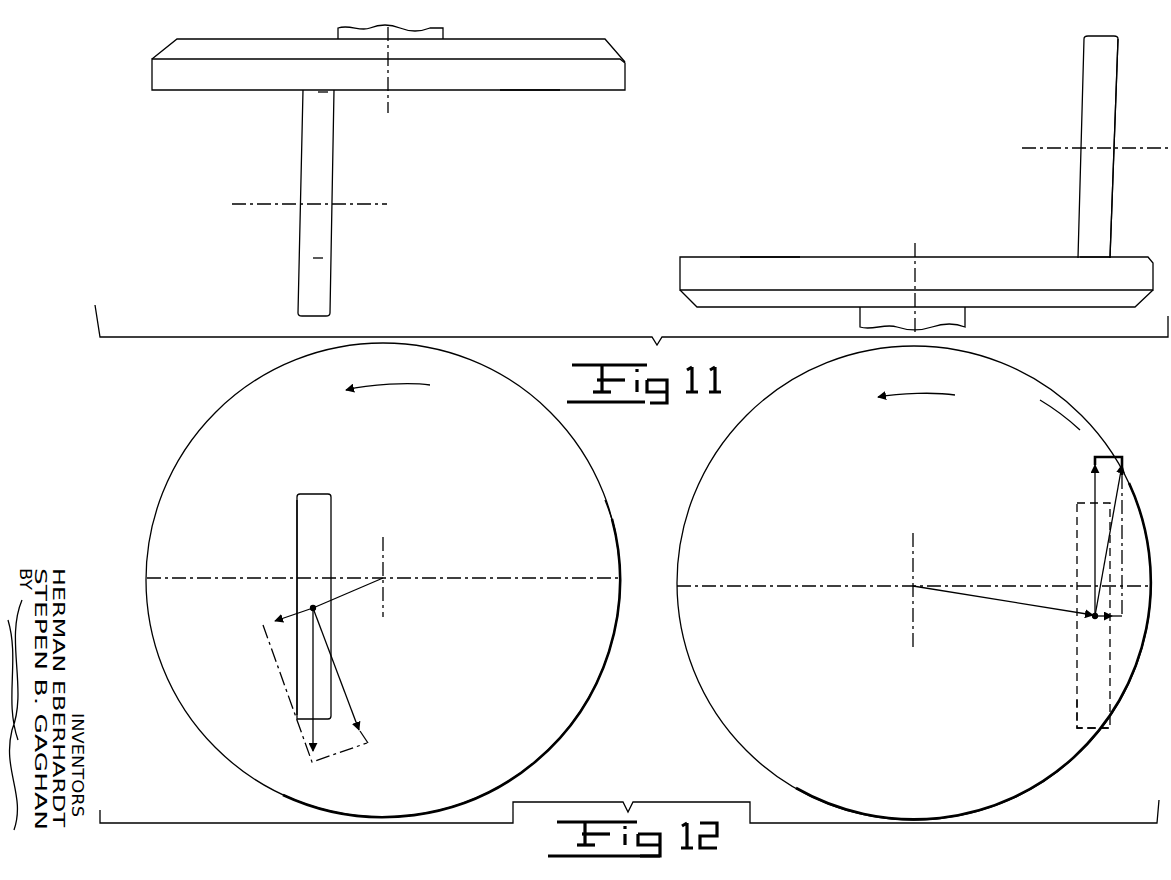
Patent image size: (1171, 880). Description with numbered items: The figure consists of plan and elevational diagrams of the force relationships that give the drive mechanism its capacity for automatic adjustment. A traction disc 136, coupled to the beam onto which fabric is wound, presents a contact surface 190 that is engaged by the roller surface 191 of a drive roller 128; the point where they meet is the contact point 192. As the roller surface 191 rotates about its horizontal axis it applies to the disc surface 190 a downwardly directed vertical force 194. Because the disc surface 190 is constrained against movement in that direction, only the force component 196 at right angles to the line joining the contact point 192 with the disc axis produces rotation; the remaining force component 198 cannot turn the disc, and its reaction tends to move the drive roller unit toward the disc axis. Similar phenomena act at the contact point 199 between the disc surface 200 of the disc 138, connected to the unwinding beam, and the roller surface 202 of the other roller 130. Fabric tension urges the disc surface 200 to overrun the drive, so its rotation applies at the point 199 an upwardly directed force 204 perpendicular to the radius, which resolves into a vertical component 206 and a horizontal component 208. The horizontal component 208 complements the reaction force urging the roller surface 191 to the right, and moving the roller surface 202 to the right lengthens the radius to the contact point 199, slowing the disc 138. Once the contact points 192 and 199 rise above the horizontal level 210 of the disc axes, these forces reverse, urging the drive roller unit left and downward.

In FIG. 11, the traction disc 136 is at (152, 80).
In FIG. 12, the traction disc 136 is at (181, 455).
In FIG. 11, the contact surface of traction disc 190 is at (528, 93).
In FIG. 12, the contact surface of traction disc 190 is at (589, 493).
In FIG. 11, the drive roller 128 is at (303, 145).
In FIG. 12, the drive roller 128 is at (332, 543).
In FIG. 11, the point of contact 192 is at (323, 95).
In FIG. 12, the point of contact 192 is at (310, 605).
In FIG. 11, the roller surface of drive roller 191 is at (318, 262).
In FIG. 12, the roller surface of drive roller 191 is at (298, 522).
In FIG. 11, the traction disc 138 is at (679, 279).
In FIG. 12, the traction disc 138 is at (711, 708).
In FIG. 11, the disc surface 200 is at (803, 247).
In FIG. 12, the disc surface 200 is at (1061, 416).
In FIG. 11, the roller 130 is at (1078, 208).
In FIG. 12, the roller 130 is at (1077, 700).
In FIG. 11, the roller surface 202 is at (1095, 88).
In FIG. 12, the roller surface 202 is at (1093, 667).
In FIG. 11, the contact point 199 is at (1098, 256).
In FIG. 12, the contact point 199 is at (1092, 612).
In FIG. 12, the force component 198 is at (283, 609).
In FIG. 12, the downwardly directed vertical force 194 is at (312, 693).
In FIG. 12, the force component 196 is at (357, 718).
In FIG. 12, the horizontal level of axis of rotation 210 is at (532, 580).
In FIG. 12, the applied force 204 is at (1120, 473).
In FIG. 12, the vertical component 206 is at (1093, 492).
In FIG. 12, the horizontal component 208 is at (1098, 620).